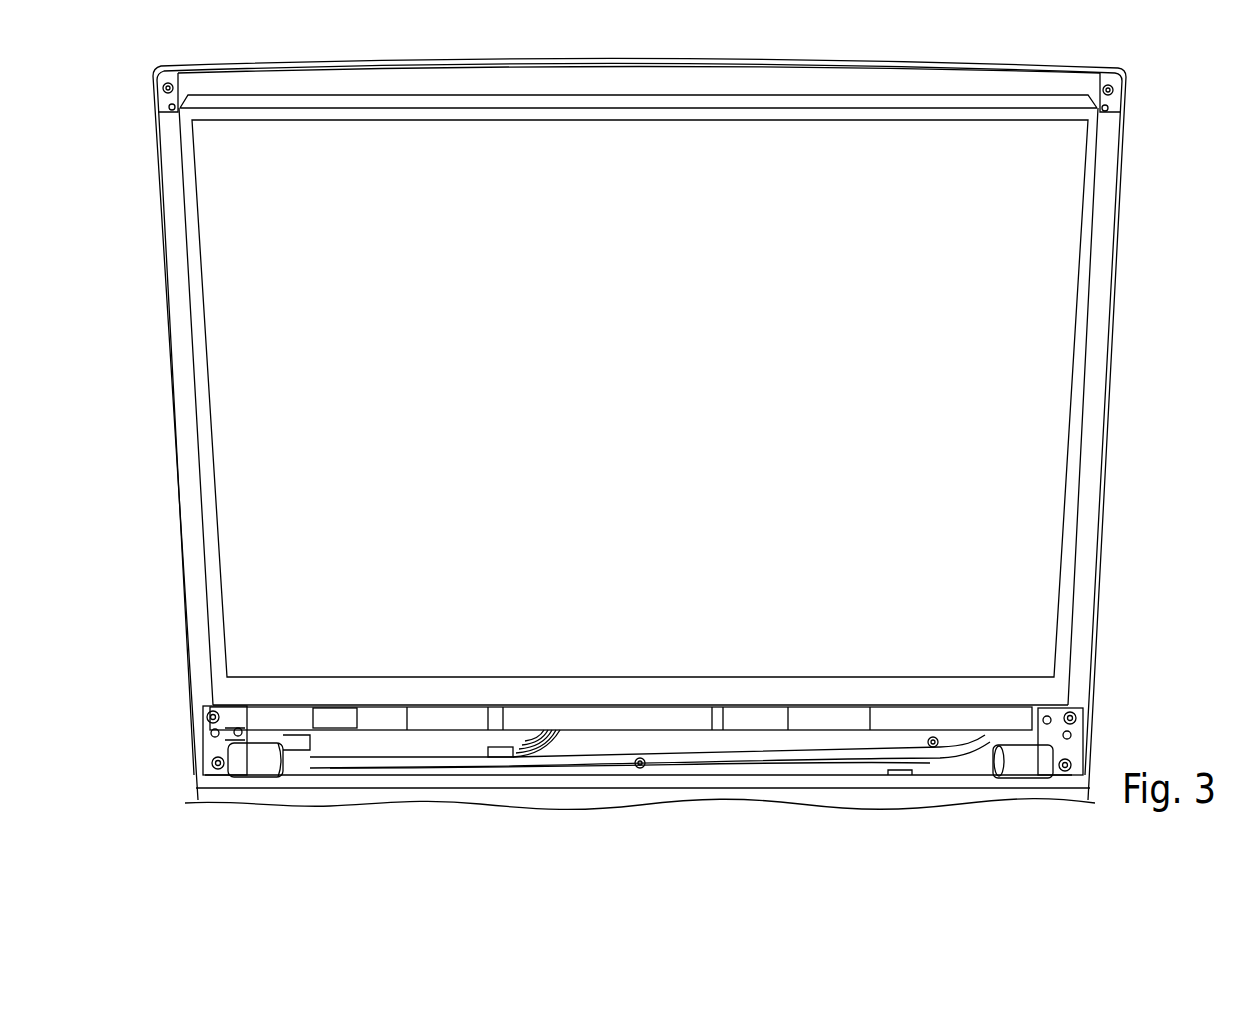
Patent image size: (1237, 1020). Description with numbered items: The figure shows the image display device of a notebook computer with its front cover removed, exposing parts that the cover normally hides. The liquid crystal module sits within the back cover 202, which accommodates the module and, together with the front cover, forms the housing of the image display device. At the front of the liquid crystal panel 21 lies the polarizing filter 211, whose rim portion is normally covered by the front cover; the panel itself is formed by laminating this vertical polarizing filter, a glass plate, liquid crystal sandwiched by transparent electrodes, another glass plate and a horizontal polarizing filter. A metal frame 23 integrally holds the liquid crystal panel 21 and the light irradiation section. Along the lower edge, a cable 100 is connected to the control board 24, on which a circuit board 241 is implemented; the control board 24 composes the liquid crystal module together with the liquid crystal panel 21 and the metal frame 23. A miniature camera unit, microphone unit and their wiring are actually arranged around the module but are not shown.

The liquid crystal panel 21 is at (1028, 362).
The metal frame 23 is at (727, 105).
The control board 24 is at (267, 717).
The cable 100 is at (543, 738).
The back cover 202 is at (1088, 494).
The polarizing filter (vertical) 211 is at (1042, 210).
The circuit board 241 is at (810, 717).